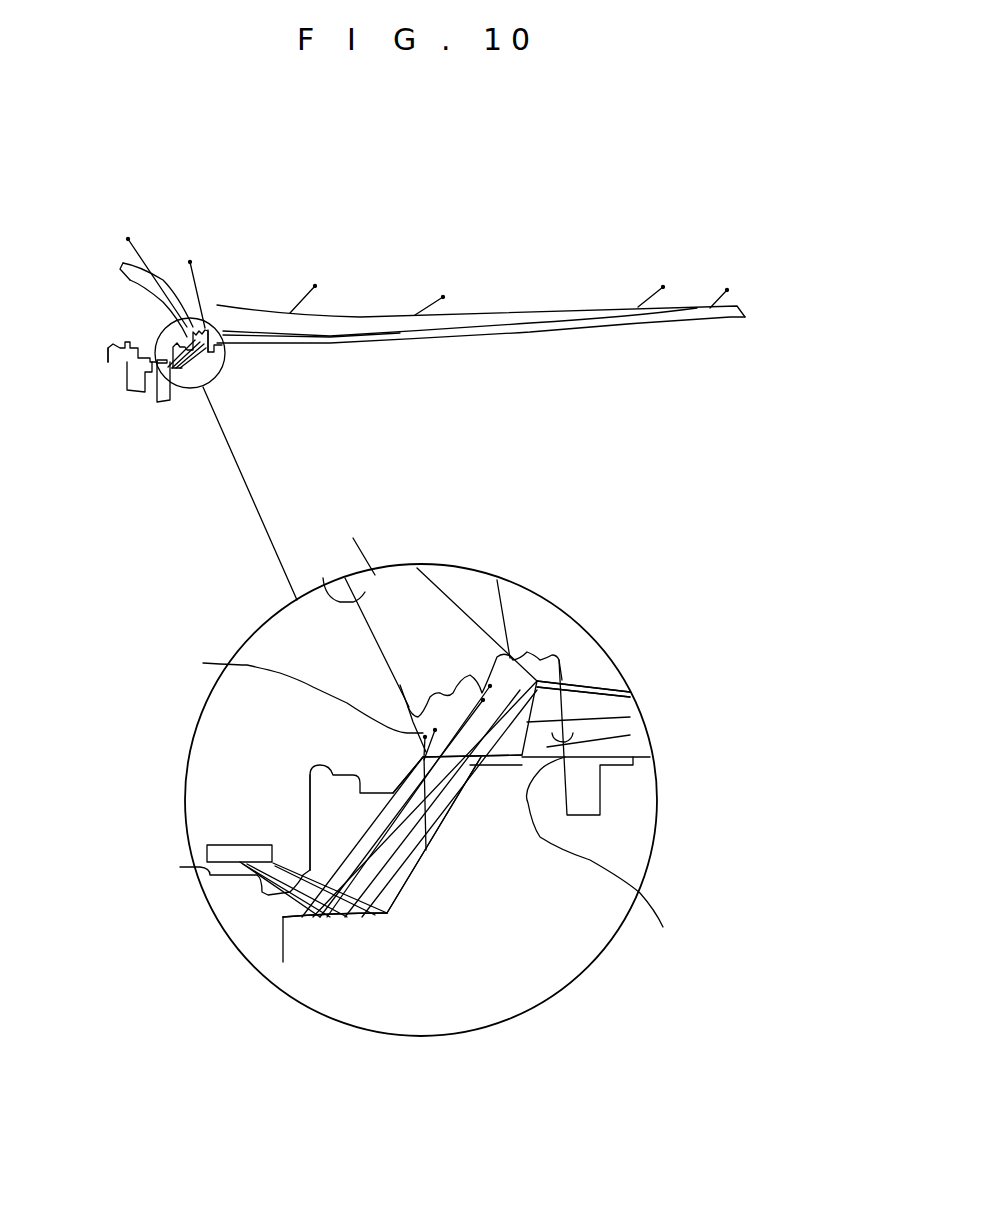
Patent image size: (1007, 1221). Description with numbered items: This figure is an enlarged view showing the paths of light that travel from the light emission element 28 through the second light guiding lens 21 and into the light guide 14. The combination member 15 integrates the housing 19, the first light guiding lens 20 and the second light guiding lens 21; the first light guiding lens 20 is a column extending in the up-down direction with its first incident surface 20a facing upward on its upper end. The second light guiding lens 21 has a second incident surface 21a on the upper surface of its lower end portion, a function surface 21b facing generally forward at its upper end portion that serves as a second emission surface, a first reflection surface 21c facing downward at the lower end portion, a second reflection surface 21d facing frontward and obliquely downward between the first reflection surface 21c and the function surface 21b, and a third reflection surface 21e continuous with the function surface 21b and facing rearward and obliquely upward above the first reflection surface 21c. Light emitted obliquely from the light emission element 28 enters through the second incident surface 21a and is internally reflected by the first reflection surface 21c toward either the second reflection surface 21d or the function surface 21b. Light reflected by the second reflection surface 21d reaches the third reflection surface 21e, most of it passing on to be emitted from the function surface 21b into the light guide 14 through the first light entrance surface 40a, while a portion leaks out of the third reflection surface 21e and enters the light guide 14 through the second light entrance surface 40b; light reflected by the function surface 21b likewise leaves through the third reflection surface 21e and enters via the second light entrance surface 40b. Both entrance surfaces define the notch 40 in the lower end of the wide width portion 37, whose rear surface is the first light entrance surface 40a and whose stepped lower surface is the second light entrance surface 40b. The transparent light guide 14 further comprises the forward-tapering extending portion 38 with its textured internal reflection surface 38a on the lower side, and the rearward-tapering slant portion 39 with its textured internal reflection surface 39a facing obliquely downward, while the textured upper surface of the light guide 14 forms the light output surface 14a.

The light guide 14 is at (243, 312).
The light output surface 14a is at (350, 317).
The combination member 15 is at (108, 345).
The housing 19 is at (113, 347).
The first light guiding lens 20 is at (163, 403).
The first incident surface 20a is at (190, 867).
The second light guiding lens 21 is at (183, 343).
The second incident surface 21a is at (305, 875).
The function surface 21b is at (537, 681).
The first reflection surface 21c is at (387, 913).
The second reflection surface 21d is at (423, 853).
The third reflection surface 21e is at (428, 752).
The light emission element 28 is at (213, 847).
The wide width portion 37 is at (220, 303).
The extending portion 38 is at (493, 310).
The internal reflection surface 38a is at (407, 343).
The slant portion 39 is at (125, 264).
The internal reflection surface 39a is at (140, 283).
The notch 40 is at (605, 851).
The first light entrance surface 40a is at (555, 735).
The second light entrance surface 40b is at (203, 663).